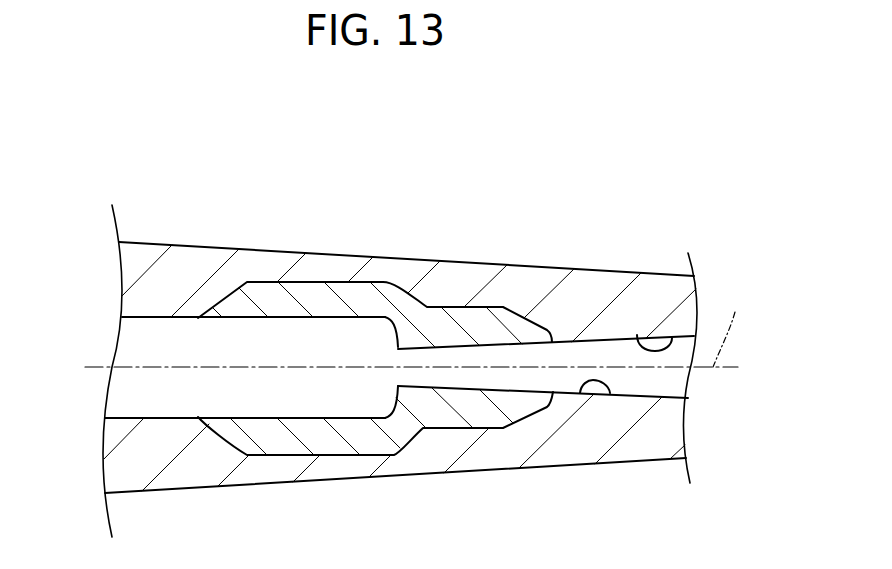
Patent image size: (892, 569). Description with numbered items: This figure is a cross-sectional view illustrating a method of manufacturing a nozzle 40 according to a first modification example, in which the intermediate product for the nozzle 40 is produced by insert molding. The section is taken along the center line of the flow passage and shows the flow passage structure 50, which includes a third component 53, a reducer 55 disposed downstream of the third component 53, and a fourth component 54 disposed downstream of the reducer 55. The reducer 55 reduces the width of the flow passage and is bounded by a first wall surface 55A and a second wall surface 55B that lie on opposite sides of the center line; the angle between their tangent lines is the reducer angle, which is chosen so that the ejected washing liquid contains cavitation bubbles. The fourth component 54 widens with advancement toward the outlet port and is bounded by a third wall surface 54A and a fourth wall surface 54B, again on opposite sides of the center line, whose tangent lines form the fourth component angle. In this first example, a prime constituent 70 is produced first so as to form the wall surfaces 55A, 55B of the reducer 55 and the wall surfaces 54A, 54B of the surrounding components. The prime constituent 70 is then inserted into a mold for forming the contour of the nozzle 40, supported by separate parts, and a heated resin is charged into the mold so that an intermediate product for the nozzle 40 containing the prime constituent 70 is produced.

The nozzle 40 is at (590, 153).
The flow passage structure 50 is at (463, 262).
The third component 53 is at (143, 252).
The fourth component 54 is at (540, 272).
The third wall surface 54A is at (638, 335).
The fourth wall surface 54B is at (582, 393).
The reducer 55 is at (387, 307).
The first wall surface 55A is at (395, 345).
The second wall surface 55B is at (397, 385).
The prime constituent 70 is at (365, 443).